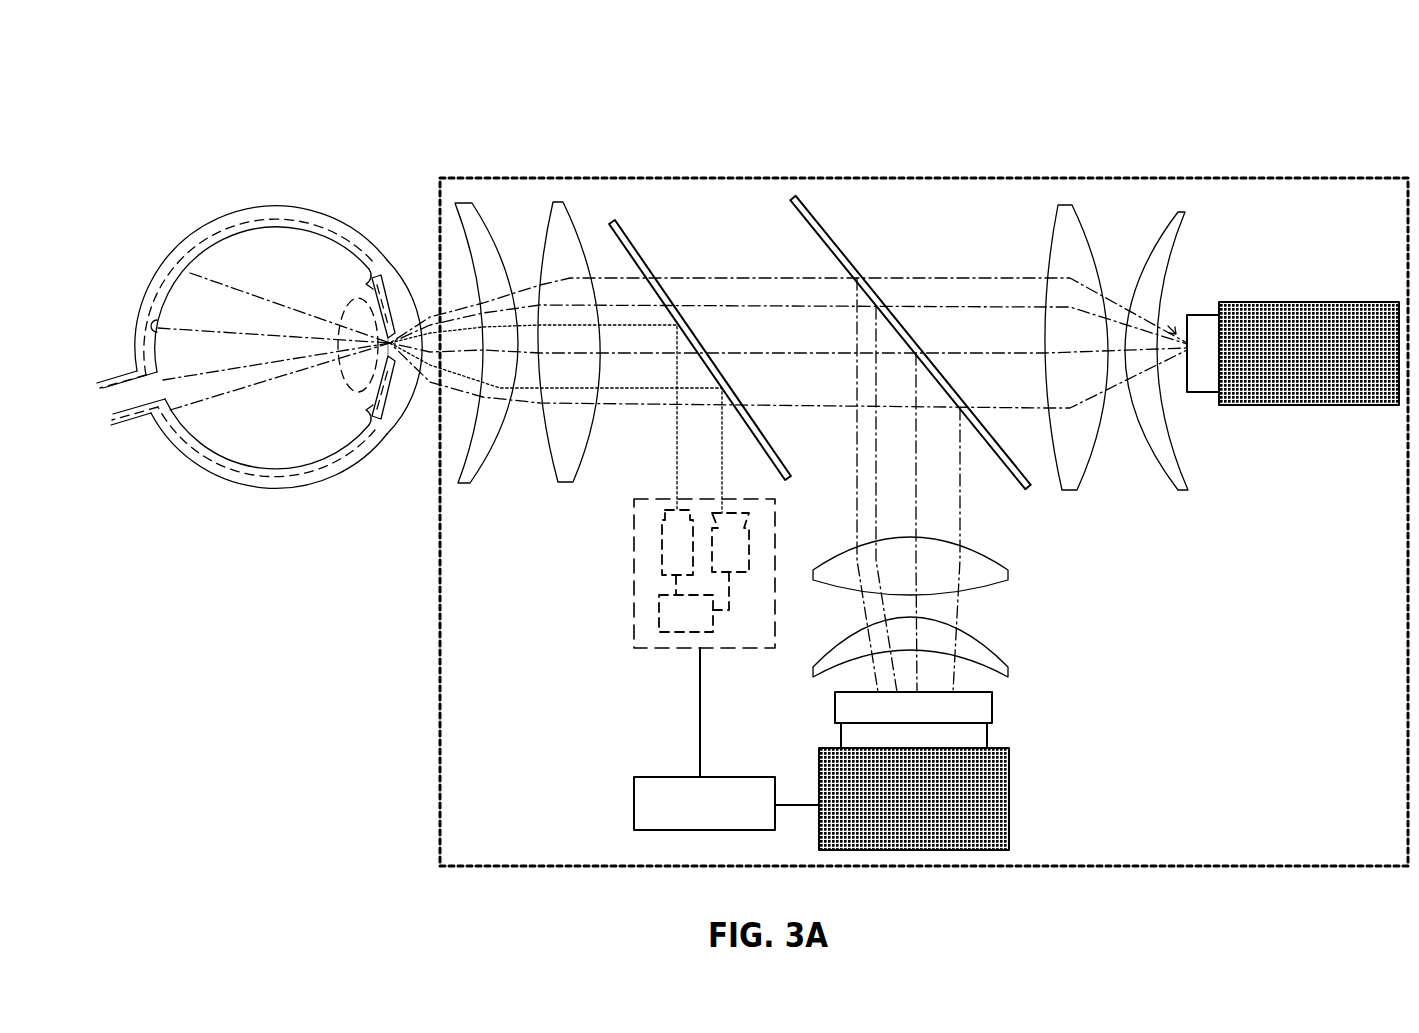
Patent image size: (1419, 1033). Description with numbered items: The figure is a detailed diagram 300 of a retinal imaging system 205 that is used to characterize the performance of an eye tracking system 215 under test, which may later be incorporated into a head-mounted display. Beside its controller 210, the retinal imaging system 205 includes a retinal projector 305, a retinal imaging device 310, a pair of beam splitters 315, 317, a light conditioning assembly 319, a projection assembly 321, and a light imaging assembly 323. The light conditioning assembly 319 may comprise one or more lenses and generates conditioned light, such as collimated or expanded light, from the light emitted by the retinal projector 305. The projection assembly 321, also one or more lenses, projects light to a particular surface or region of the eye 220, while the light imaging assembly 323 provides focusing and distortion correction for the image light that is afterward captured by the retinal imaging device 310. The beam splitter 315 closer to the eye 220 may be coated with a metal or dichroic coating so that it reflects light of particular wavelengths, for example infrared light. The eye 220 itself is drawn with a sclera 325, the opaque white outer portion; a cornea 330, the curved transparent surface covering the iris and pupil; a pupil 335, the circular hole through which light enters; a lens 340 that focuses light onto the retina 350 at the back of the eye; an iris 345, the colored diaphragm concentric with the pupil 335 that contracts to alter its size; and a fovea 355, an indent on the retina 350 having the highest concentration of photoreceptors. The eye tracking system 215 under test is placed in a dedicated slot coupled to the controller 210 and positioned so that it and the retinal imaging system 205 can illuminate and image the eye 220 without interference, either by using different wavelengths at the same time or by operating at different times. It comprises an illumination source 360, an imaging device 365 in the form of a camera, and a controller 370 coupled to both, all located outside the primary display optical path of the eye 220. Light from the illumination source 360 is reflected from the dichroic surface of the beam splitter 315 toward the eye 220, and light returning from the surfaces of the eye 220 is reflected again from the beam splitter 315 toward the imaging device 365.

The detailed diagram 300 is at (116, 49).
The retinal imaging system 205 is at (1191, 300).
The controller 210 is at (634, 797).
The eye tracking system 215 is at (535, 620).
The eye 220 is at (269, 324).
The retinal projector 305 is at (1009, 777).
The retinal imaging device 310 is at (1310, 405).
The beam splitter 315 is at (638, 257).
The beam splitter 317 is at (815, 213).
The light conditioning assembly 319 is at (1053, 607).
The projection assembly 321 is at (527, 261).
The light imaging assembly 323 is at (1192, 279).
The sclera 325 is at (330, 220).
The cornea 330 is at (421, 397).
The pupil 335 is at (390, 337).
The lens 340 is at (350, 380).
The iris 345 is at (380, 365).
The retina 350 is at (222, 238).
The fovea 355 is at (157, 322).
The illumination source 360 is at (660, 548).
The imaging device 365 is at (739, 560).
The controller 370 is at (675, 632).